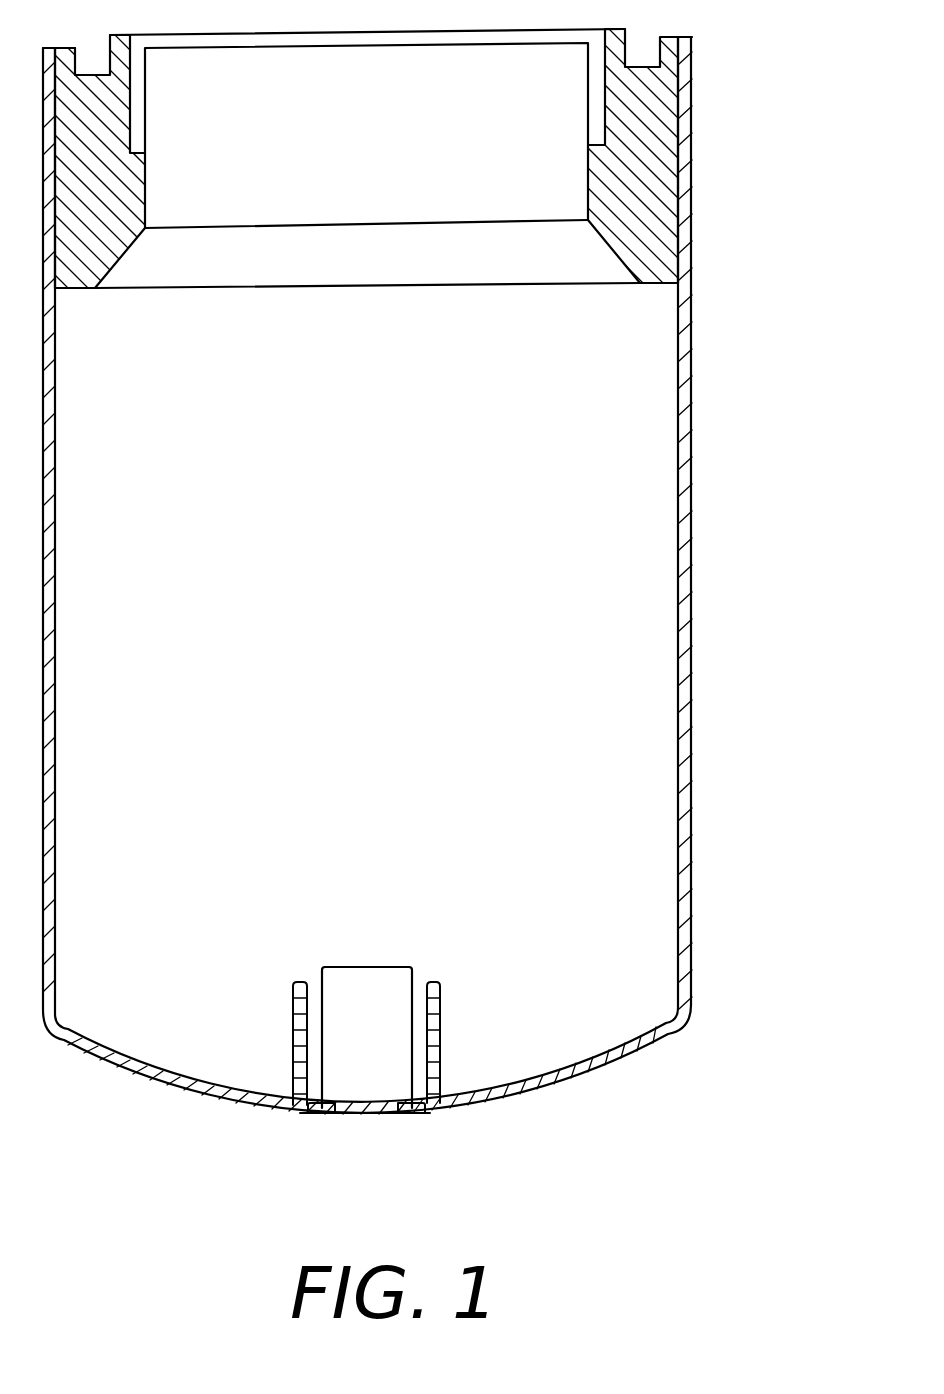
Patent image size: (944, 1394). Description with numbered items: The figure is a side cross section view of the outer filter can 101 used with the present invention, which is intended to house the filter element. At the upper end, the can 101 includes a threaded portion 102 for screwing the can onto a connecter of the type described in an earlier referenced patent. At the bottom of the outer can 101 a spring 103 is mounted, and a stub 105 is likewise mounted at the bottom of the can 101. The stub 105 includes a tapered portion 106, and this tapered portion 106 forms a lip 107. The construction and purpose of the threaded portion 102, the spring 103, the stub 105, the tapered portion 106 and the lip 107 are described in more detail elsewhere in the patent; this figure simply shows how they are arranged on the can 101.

The filter can 101 is at (703, 504).
The threaded portion 102 is at (148, 88).
The spring 103 is at (286, 1029).
The stub 105 is at (384, 1116).
The tapered portion 106 is at (361, 946).
The lip 107 is at (329, 967).